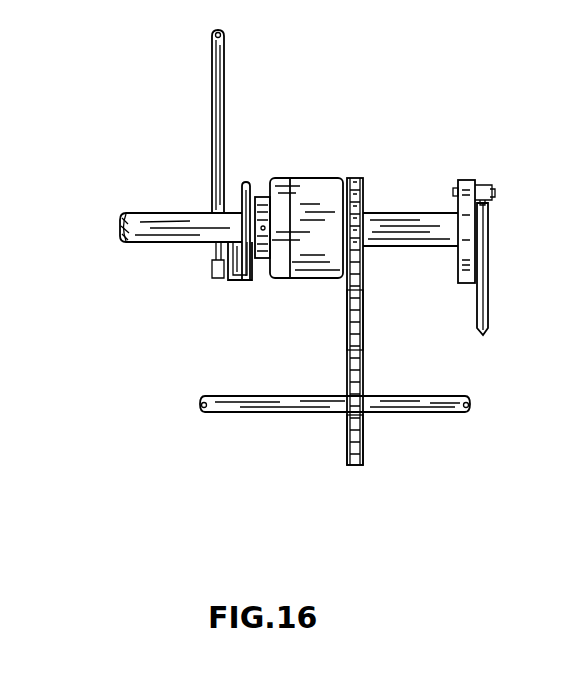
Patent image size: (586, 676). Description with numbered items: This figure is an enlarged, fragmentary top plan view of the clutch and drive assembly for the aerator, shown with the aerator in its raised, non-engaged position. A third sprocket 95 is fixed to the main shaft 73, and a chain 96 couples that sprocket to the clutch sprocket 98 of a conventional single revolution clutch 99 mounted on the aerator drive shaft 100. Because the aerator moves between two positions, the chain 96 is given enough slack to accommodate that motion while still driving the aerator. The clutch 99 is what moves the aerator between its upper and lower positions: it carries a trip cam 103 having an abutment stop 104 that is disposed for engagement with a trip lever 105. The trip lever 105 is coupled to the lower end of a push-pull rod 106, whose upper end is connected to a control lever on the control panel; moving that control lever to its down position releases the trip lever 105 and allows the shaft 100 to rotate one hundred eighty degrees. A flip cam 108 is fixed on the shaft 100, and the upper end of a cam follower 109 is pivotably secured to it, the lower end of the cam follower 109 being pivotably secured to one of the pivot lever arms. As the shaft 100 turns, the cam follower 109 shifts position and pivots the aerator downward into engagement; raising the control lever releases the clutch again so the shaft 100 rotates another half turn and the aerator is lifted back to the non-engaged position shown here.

The main shaft 73 is at (250, 405).
The third sprocket 95 is at (364, 430).
The chain 96 is at (364, 319).
The clutch sprocket 98 is at (371, 188).
The single revolution clutch 99 is at (318, 245).
The aerator drive shaft 100 is at (165, 222).
The trip cam 103 is at (246, 182).
The abutment stop 104 is at (262, 197).
The trip lever 105 is at (244, 280).
The push-pull rod 106 is at (224, 74).
The flip cam 108 is at (466, 180).
The cam follower 109 is at (489, 243).